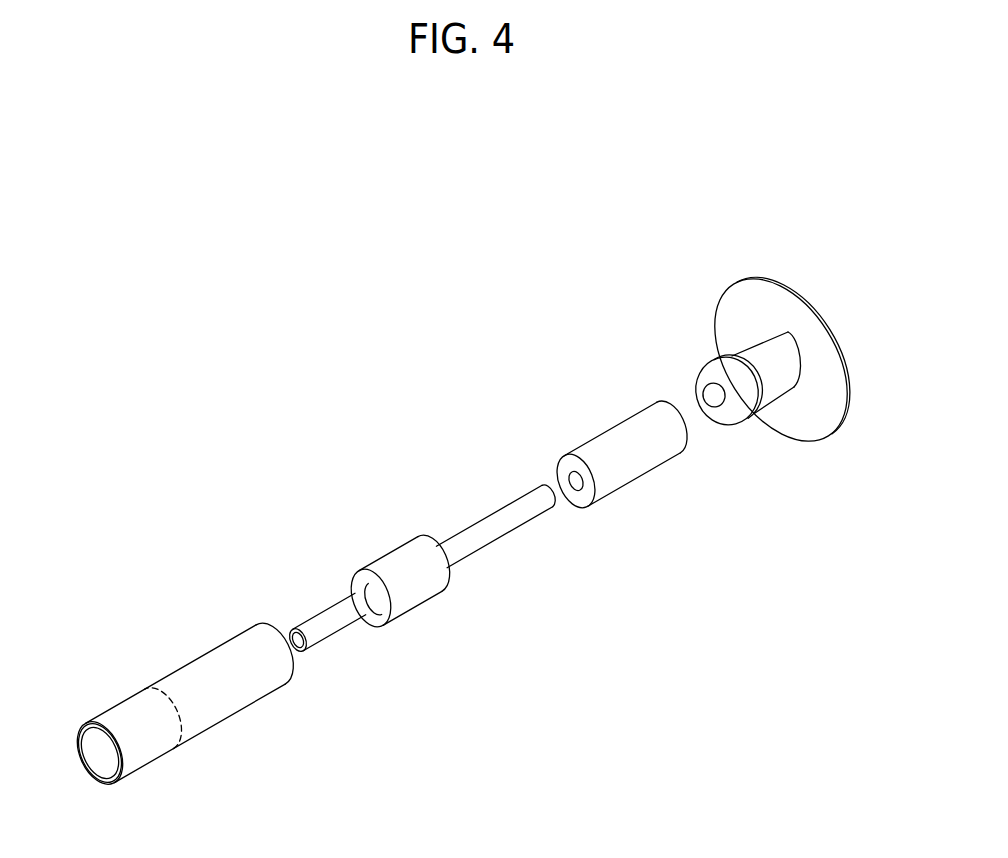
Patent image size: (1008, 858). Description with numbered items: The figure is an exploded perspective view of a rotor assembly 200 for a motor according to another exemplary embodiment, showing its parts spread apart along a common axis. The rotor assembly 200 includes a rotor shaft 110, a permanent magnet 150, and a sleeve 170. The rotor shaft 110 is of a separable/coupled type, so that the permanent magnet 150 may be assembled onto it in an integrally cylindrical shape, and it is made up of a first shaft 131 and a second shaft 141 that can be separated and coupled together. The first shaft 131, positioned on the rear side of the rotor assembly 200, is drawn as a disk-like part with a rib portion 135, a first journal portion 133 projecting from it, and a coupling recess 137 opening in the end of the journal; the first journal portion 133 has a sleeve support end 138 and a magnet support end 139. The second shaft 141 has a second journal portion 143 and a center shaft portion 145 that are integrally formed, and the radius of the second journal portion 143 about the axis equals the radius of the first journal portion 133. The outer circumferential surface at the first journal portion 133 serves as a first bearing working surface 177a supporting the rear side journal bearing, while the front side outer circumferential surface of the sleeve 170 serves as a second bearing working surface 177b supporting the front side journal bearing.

The rotor assembly 200 is at (484, 238).
The rotor shaft 110 is at (559, 447).
The first shaft 131 is at (746, 391).
The first journal portion 133 is at (731, 418).
The rib portion 135 is at (778, 352).
The coupling recess 137 is at (704, 395).
The sleeve support end 138 is at (733, 350).
The magnet support end 139 is at (700, 376).
The second shaft 141 is at (445, 560).
The second journal portion 143 is at (387, 562).
The center shaft portion 145 is at (488, 518).
The permanent magnet 150 is at (596, 440).
The sleeve 170 is at (180, 738).
The first bearing working surface 177a is at (792, 400).
The second bearing working surface 177b is at (152, 762).